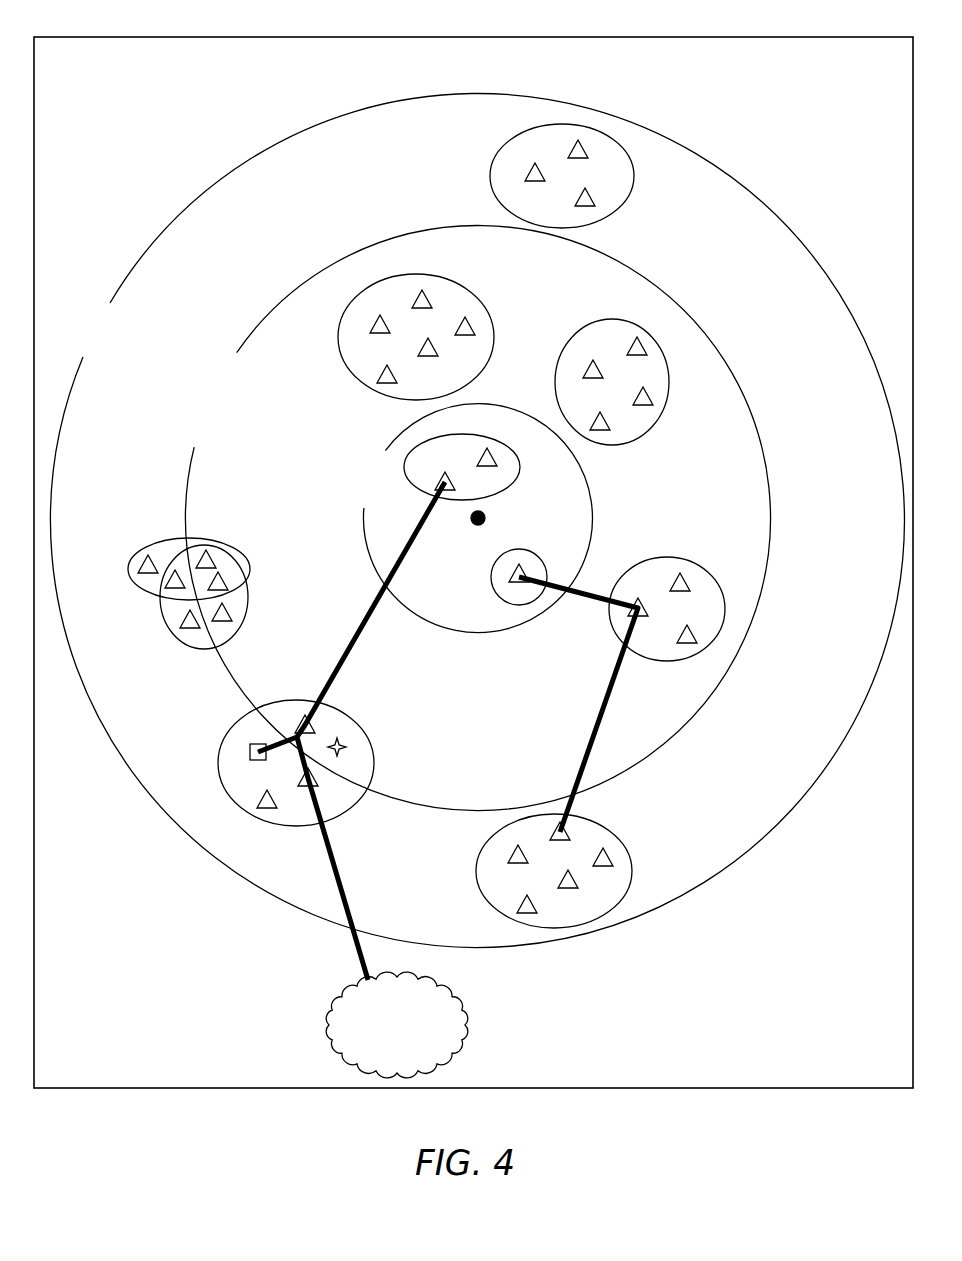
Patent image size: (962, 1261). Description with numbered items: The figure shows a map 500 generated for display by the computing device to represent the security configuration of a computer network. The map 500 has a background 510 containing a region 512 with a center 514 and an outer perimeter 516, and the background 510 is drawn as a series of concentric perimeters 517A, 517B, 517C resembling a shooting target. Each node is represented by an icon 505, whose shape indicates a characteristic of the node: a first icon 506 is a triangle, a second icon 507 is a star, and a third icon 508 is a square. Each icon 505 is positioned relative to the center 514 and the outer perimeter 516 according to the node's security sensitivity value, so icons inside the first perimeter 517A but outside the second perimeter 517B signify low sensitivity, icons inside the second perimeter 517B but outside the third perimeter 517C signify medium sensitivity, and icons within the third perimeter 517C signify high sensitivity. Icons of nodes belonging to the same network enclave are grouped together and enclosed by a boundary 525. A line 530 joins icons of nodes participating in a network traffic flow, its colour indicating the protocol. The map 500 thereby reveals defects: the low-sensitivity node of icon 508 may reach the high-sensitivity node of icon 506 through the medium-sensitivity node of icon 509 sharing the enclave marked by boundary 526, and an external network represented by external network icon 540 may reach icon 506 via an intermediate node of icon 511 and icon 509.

The map 500 is at (271, 37).
The background 510 is at (125, 119).
The region 512 is at (247, 118).
The center 514 is at (490, 514).
The outer perimeter 516 is at (773, 206).
The first perimeter 517A is at (477, 520).
The second perimeter 517B is at (690, 316).
The third perimeter 517C is at (588, 482).
The boundary 525 is at (632, 193).
The boundary 526 is at (350, 763).
The icon 505 is at (305, 640).
The first icon 506 is at (441, 476).
The second icon 507 is at (346, 743).
The third icon 508 is at (249, 747).
The icon 509 is at (298, 718).
The icon 511 is at (318, 783).
The line 530 is at (360, 640).
The external network icon 540 is at (453, 1017).